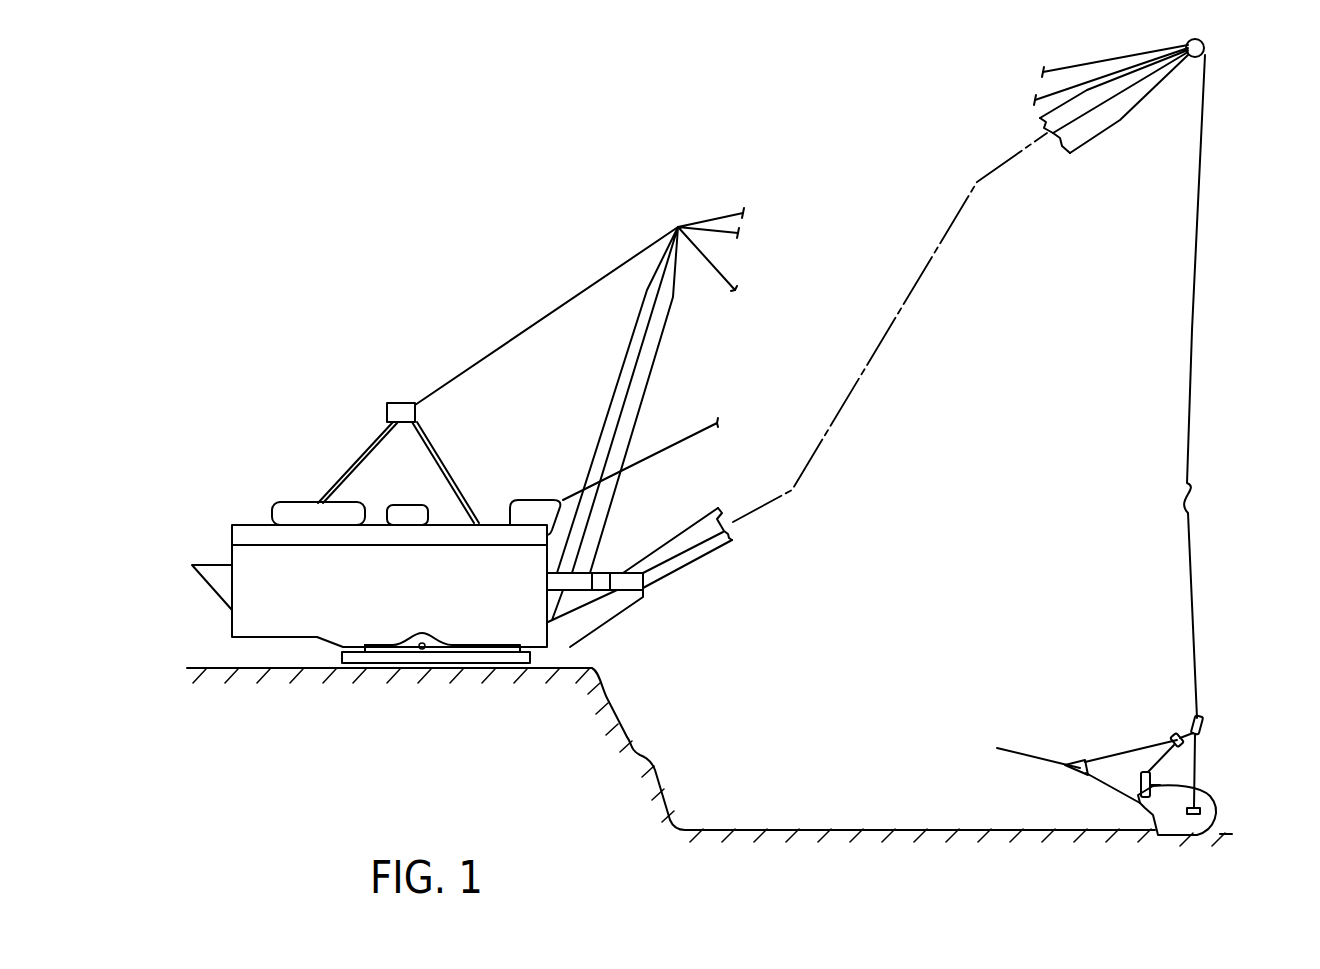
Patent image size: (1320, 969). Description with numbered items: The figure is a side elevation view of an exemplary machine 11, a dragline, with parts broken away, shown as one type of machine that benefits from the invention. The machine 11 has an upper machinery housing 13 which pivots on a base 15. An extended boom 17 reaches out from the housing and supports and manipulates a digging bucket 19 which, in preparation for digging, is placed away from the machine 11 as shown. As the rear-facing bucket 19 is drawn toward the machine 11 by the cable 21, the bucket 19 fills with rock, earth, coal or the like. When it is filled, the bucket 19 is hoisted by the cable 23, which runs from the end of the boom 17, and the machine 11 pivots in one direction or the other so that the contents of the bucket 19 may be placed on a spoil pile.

The machine 11 is at (437, 328).
The upper machinery housing 13 is at (277, 558).
The base 15 is at (407, 652).
The extended boom 17 is at (705, 557).
The digging bucket 19 is at (1210, 797).
The cable 21 is at (1030, 758).
The cable 23 is at (1192, 363).